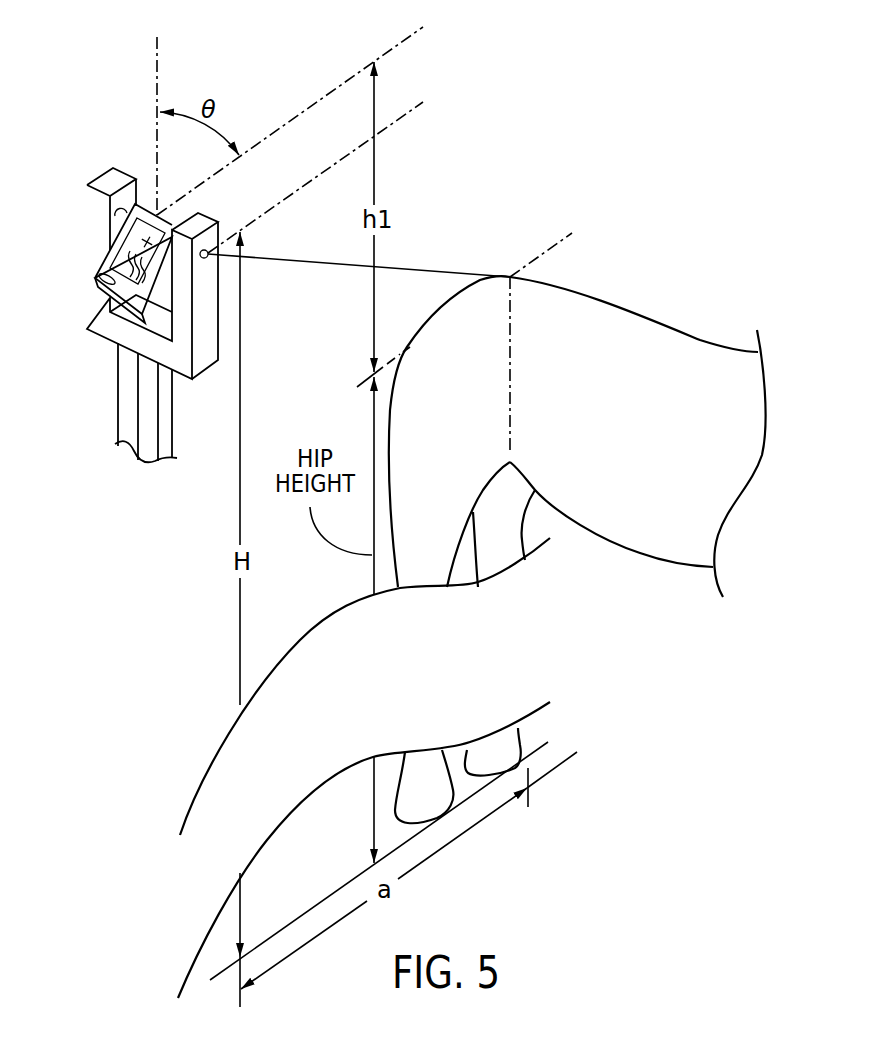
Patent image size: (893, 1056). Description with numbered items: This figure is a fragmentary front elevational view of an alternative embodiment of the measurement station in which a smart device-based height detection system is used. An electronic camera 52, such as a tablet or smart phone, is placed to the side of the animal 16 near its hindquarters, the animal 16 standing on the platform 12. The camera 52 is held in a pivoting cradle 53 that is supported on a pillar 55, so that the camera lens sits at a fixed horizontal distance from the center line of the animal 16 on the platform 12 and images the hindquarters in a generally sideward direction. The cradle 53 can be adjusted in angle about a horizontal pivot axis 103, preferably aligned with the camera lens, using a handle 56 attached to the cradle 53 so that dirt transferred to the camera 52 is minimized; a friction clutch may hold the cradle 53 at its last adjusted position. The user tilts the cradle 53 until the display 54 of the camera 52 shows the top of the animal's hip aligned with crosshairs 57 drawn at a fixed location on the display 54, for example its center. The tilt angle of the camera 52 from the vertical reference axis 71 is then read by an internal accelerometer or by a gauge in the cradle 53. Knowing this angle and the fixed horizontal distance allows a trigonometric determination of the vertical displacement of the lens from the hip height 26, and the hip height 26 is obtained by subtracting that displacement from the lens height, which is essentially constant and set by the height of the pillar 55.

The platform 12 is at (472, 583).
The animal 16 is at (603, 320).
The hip height 26 is at (540, 253).
The electronic camera 52 is at (176, 212).
The pivoting cradle 53 is at (135, 308).
The display 54 is at (148, 207).
The pillar 55 is at (128, 432).
The handle 56 is at (98, 283).
The crosshairs 57 is at (135, 243).
The vertical reference axis 71 is at (157, 70).
The horizontal pivot axis 103 is at (205, 260).